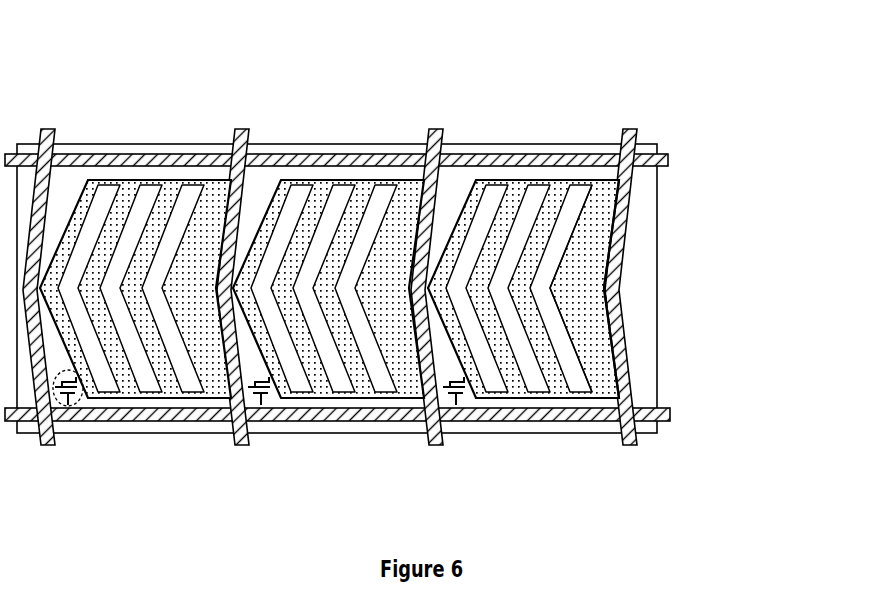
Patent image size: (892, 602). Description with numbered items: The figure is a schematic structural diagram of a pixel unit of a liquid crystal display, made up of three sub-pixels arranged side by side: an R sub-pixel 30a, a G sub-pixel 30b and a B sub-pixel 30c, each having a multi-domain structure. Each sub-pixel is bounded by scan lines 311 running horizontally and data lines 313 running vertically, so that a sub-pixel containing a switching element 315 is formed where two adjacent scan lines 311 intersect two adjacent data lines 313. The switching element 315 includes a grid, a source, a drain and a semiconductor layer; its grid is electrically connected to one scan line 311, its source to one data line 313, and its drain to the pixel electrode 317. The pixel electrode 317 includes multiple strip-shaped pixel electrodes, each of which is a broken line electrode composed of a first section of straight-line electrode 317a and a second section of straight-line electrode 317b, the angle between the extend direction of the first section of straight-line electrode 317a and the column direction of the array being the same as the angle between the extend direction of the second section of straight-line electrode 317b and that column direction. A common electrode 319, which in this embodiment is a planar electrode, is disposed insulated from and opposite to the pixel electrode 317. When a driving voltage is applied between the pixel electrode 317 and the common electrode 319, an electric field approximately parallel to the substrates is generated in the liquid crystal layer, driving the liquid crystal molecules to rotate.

The R sub-pixel 30a is at (127, 113).
The G sub-pixel 30b is at (296, 113).
The B sub-pixel 30c is at (466, 113).
The scan line 311 is at (647, 413).
The data line 313 is at (640, 175).
The switching element 315 is at (73, 417).
The pixel electrode 317 is at (507, 398).
The first section of straight-line electrode 317a is at (575, 255).
The second section of straight-line electrode 317b is at (575, 316).
The common electrode 319 is at (642, 220).